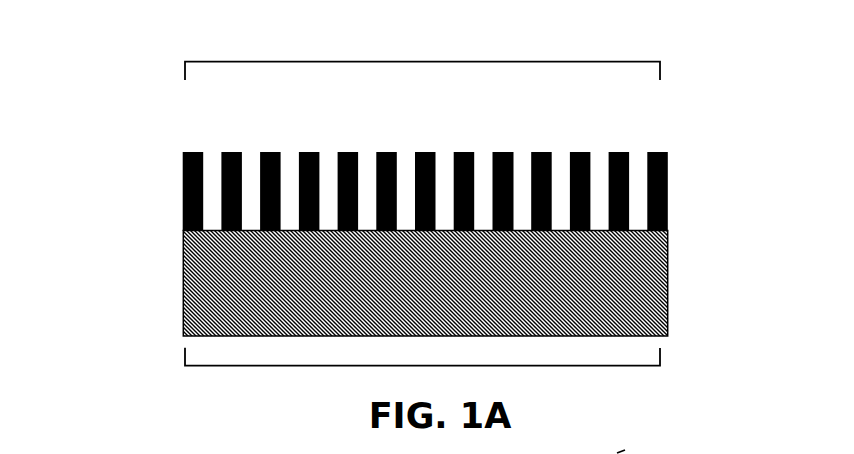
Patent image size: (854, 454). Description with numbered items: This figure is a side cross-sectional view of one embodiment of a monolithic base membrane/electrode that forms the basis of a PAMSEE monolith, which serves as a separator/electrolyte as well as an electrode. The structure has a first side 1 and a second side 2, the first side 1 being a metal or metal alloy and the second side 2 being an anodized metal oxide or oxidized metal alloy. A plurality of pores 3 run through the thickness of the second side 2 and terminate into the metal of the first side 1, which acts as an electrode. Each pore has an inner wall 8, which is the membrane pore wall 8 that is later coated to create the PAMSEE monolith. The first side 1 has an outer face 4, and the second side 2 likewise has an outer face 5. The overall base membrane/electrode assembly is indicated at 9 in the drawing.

The first side 1 is at (668, 282).
The second side 2 is at (668, 205).
The pores 3 is at (442, 167).
The outer face of the first side 4 is at (282, 366).
The outer face of the second side 5 is at (319, 62).
The membrane pore wall 8 is at (513, 158).
The patterned structure 9 is at (109, 230).